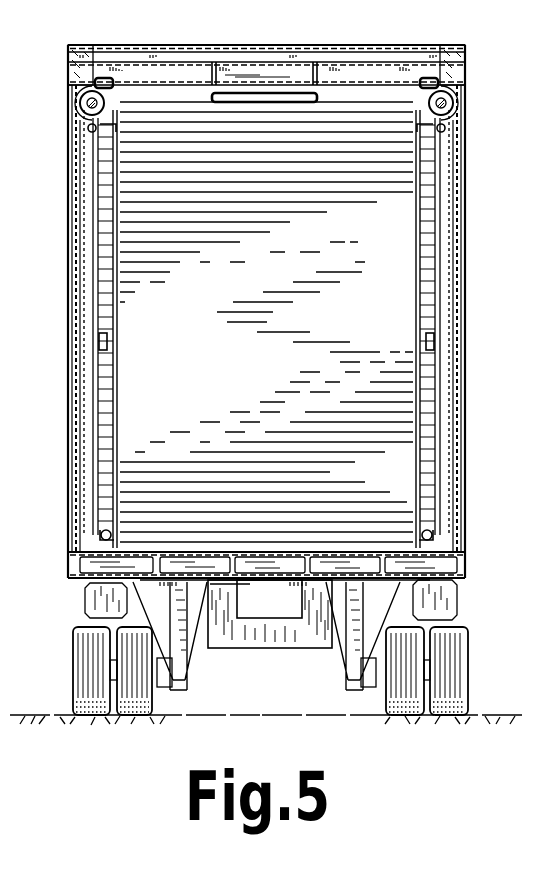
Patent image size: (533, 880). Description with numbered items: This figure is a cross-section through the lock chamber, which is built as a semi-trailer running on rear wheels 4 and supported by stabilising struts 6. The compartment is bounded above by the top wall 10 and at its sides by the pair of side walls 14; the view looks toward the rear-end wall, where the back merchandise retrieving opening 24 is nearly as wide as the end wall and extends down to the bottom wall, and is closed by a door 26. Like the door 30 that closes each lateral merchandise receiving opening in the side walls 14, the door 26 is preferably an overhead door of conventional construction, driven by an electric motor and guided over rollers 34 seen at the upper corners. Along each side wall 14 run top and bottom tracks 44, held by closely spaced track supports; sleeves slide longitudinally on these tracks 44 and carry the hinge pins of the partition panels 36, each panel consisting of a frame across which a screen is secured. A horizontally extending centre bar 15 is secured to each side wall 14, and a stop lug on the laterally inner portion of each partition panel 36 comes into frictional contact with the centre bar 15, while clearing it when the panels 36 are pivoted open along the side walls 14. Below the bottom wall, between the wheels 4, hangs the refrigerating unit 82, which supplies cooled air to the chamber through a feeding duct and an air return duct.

The top wall 10 is at (358, 44).
The door 30 is at (76, 187).
The side walls 14 is at (90, 304).
The rollers 34 is at (452, 93).
The tracks 44 is at (93, 130).
The partition panels 36 is at (117, 375).
The centre bar 15 is at (101, 340).
The back merchandise retrieving opening 24 is at (324, 322).
The door 26 is at (403, 220).
The stabilising struts 6 is at (100, 593).
The rear wheels 4 is at (88, 642).
The refrigerating unit 82 is at (258, 638).